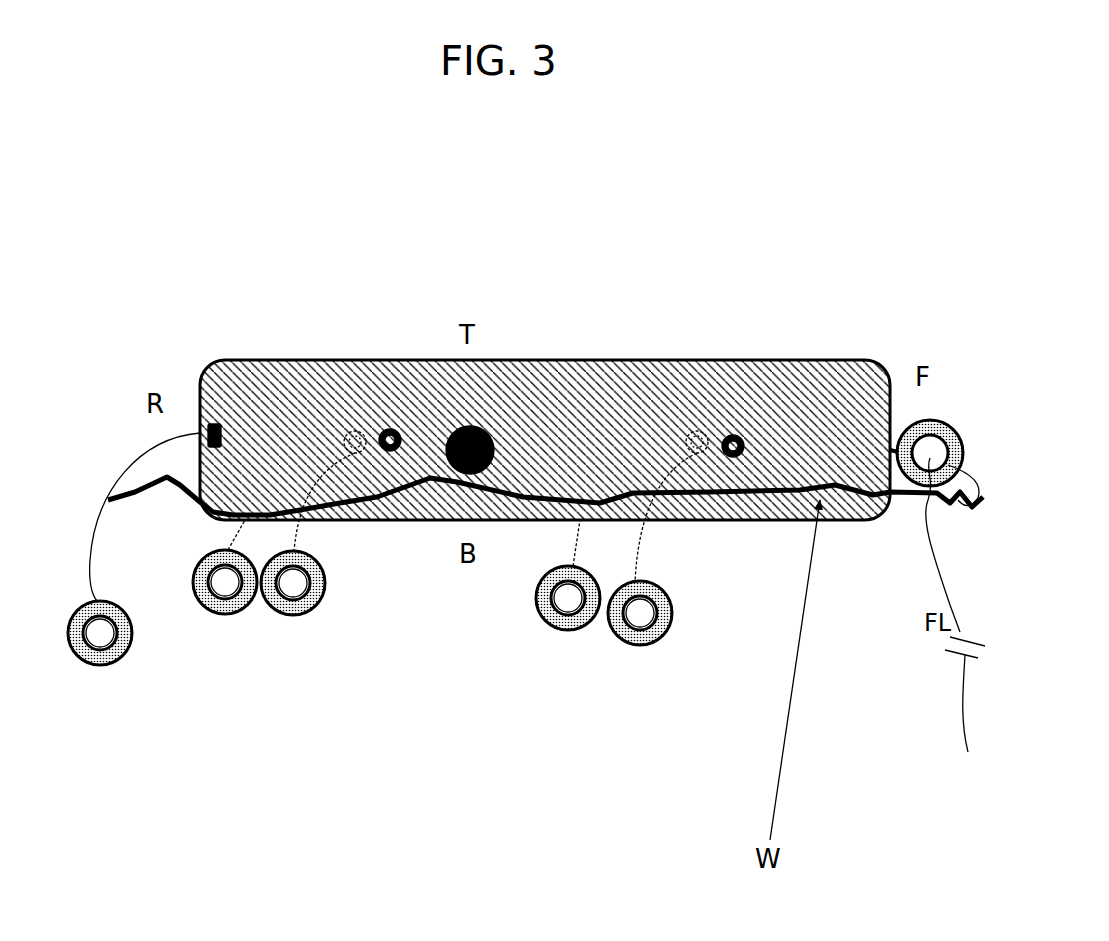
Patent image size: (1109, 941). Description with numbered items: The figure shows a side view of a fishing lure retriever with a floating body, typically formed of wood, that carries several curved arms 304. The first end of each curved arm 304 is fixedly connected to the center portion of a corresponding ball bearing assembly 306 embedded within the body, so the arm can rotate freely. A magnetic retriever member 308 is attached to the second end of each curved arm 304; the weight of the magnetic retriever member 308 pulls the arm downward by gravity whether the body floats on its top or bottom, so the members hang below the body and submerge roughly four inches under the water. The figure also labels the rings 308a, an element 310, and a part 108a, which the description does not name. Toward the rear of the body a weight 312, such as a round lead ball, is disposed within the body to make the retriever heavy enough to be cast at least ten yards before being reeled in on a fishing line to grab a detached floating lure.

The curved arm 304 is at (128, 480).
The ball bearing assembly 306 is at (388, 424).
The magnetic retriever member 308 is at (89, 667).
The grommet ring opening 308a is at (102, 636).
The front fastening ring 310 is at (918, 420).
The weight 312 is at (462, 424).
The opening 108a is at (510, 762).